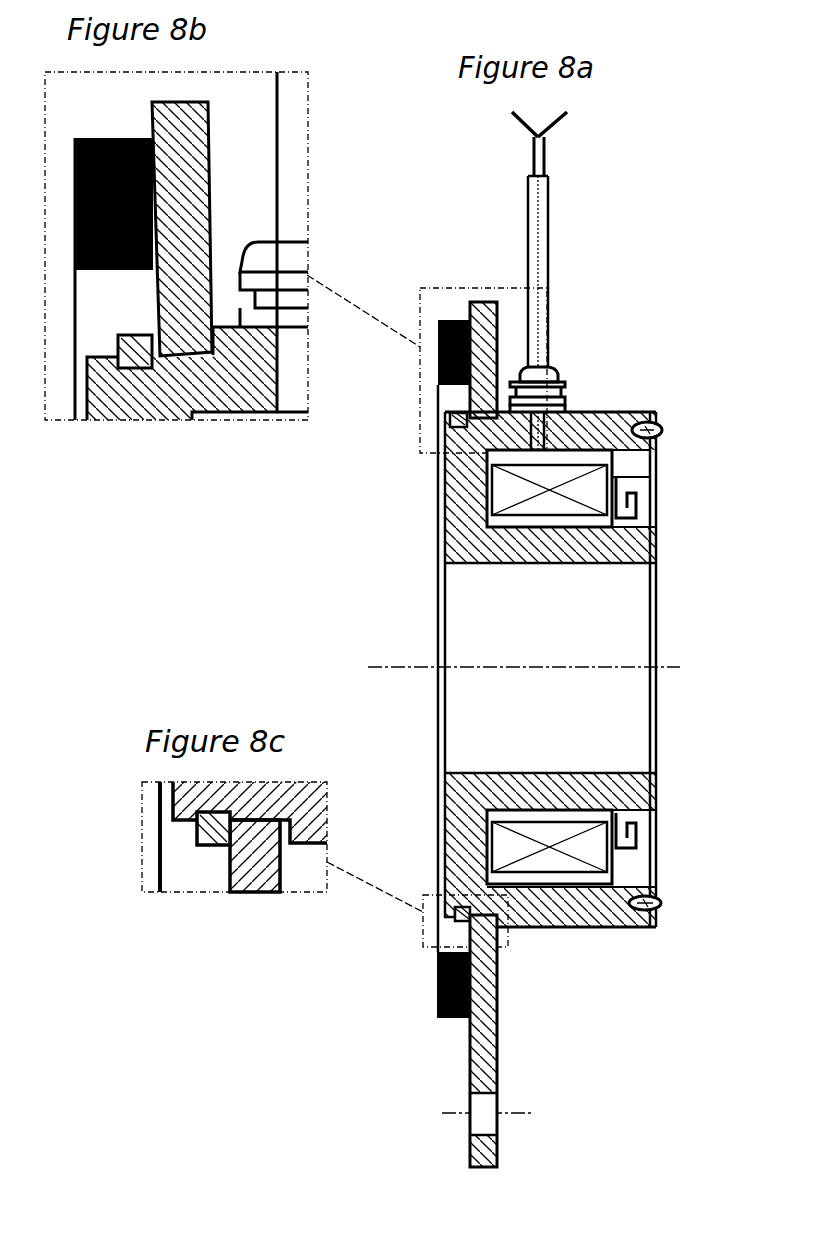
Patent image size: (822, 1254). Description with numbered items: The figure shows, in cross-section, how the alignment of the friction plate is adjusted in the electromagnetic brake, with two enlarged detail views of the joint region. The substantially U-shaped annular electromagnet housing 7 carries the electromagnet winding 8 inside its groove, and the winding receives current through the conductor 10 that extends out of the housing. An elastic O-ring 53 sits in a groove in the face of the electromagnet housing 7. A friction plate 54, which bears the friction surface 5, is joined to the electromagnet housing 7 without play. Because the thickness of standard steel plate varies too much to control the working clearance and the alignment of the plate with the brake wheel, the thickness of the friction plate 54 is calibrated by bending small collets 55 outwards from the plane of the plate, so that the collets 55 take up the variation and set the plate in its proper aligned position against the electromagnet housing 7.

In FIG. 8a, the friction surface 5 is at (437, 985).
In FIG. 8b, the friction surface 5 is at (75, 165).
In FIG. 8a, the electromagnet housing 7 is at (614, 410).
In FIG. 8a, the electromagnet winding 8 is at (640, 478).
In FIG. 8a, the conductor 10 is at (533, 240).
In FIG. 8a, the O-ring 53 is at (663, 428).
In FIG. 8a, the friction plate 54 is at (497, 1042).
In FIG. 8b, the friction plate 54 is at (150, 122).
In FIG. 8a, the collets 55 is at (497, 932).
In FIG. 8b, the collets 55 is at (172, 300).